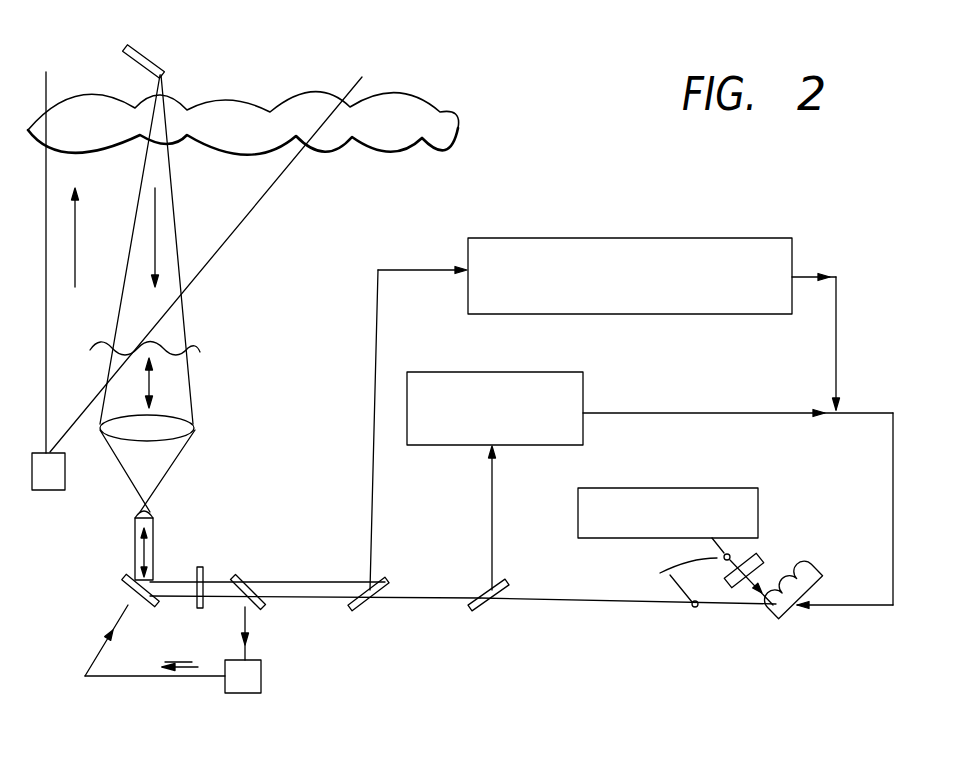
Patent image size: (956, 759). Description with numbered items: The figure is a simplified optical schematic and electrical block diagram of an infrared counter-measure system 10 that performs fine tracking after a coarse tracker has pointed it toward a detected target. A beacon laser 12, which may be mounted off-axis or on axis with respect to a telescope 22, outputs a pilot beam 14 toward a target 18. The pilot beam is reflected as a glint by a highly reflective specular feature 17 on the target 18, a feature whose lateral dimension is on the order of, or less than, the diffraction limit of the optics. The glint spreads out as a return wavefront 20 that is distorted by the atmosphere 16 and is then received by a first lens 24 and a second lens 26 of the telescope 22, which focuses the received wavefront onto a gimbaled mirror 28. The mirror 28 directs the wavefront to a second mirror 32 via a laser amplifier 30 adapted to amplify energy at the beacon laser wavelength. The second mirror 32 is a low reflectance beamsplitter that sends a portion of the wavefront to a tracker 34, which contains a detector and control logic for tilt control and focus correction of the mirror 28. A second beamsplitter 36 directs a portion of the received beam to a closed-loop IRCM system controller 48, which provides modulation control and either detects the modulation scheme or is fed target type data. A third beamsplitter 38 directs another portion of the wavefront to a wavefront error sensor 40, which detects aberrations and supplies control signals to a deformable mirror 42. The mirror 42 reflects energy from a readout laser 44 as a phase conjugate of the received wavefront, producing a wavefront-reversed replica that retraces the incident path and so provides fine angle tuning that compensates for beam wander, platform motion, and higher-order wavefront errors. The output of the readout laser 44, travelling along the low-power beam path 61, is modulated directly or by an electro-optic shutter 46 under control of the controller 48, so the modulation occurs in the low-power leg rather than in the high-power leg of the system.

The system 10 is at (633, 198).
The beacon laser 12 is at (36, 490).
The pilot beam 14 is at (46, 344).
The atmosphere 16 is at (460, 125).
The specular feature 17 is at (165, 73).
The target 18 is at (152, 60).
The return wavefront 20 is at (187, 350).
The telescope 22 is at (104, 467).
The first lens 24 is at (157, 433).
The second lens 26 is at (135, 518).
The gimbaled mirror 28 is at (124, 584).
The laser amplifier 30 is at (199, 608).
The second mirror 32 is at (263, 606).
The tracker 34 is at (261, 678).
The second beamsplitter 36 is at (385, 582).
The third beamsplitter 38 is at (470, 610).
The wavefront error sensor 40 is at (523, 445).
The deformable mirror 42 is at (778, 618).
The readout laser 44 is at (592, 538).
The electro-optic shutter 46 is at (757, 560).
The closed-loop IRCM system controller 48 is at (753, 238).
The beam path 61 is at (681, 580).